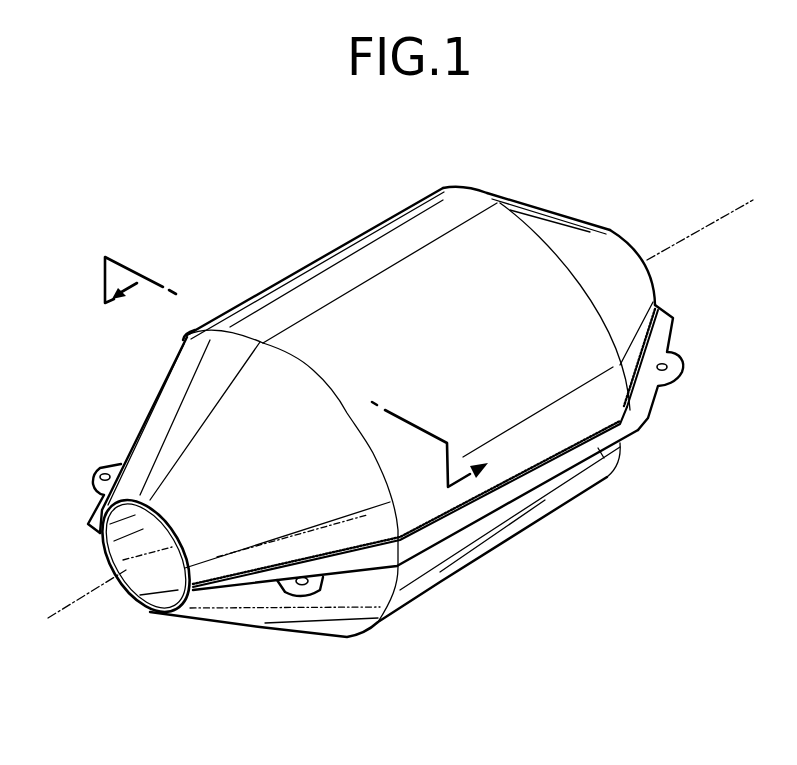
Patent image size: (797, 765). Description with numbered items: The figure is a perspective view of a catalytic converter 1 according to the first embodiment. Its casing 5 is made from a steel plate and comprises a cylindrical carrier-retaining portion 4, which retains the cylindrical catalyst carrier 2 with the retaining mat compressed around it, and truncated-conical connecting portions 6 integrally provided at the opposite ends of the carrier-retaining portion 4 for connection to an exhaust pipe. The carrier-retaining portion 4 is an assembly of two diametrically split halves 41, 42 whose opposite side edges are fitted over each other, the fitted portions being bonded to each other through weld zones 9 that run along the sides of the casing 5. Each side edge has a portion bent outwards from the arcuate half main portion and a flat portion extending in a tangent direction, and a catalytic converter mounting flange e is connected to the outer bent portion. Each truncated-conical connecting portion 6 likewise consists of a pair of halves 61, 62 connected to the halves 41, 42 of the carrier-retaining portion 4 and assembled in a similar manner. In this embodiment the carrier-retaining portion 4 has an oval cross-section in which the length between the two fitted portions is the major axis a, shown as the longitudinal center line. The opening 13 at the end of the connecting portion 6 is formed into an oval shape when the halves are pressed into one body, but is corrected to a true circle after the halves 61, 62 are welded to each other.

The catalytic converter 1 is at (543, 170).
The catalyst carrier 2 is at (281, 380).
The cylindrical carrier-retaining portion 4 is at (499, 556).
The casing 5 is at (395, 212).
The truncated-conical connecting portion 6 is at (614, 227).
The weld zone 9 is at (543, 453).
The opening 13 is at (134, 610).
The half of the cylindrical carrier retaining portion 41 is at (353, 260).
The half of the cylindrical carrier retaining portion 42 is at (557, 505).
The half of the truncated-conical connecting portion 61 is at (568, 231).
The half of the truncated-conical connecting portion 62 is at (632, 432).
The major axis a is at (737, 210).
The catalytic converter mounting flange e is at (597, 452).